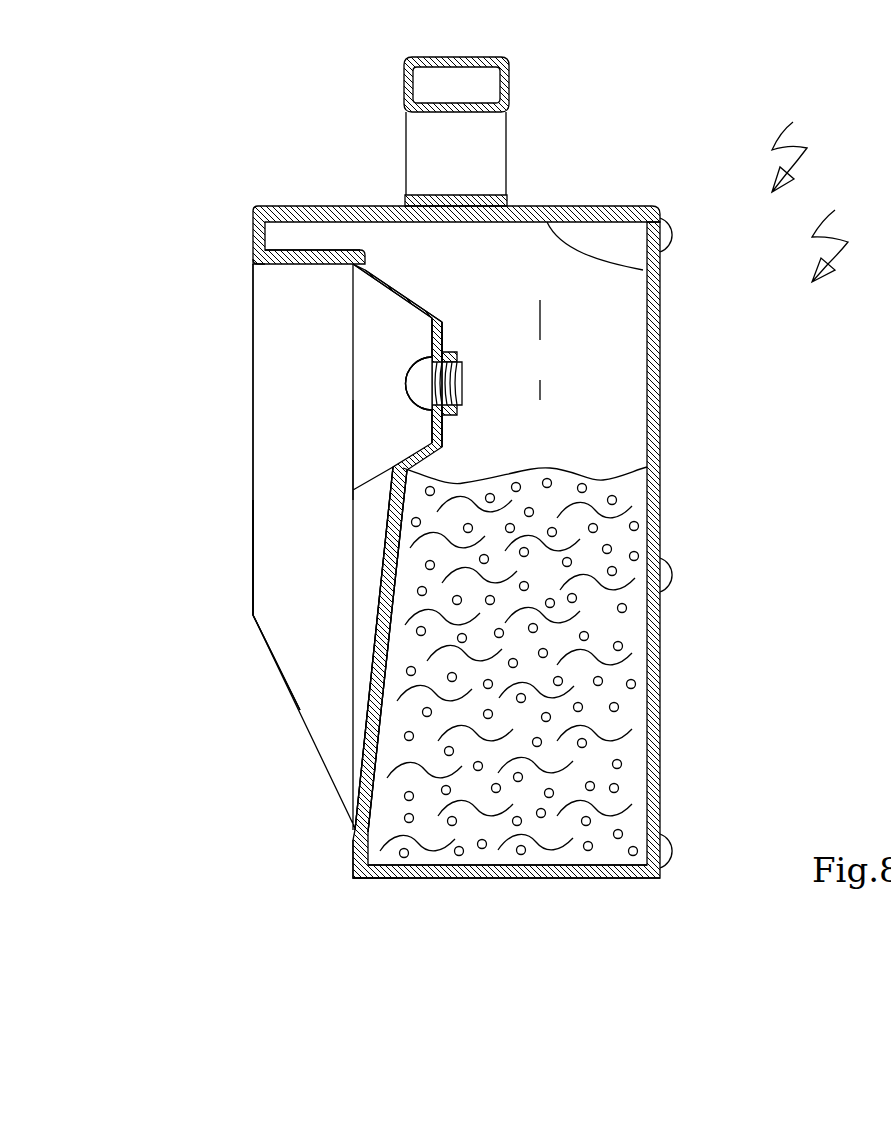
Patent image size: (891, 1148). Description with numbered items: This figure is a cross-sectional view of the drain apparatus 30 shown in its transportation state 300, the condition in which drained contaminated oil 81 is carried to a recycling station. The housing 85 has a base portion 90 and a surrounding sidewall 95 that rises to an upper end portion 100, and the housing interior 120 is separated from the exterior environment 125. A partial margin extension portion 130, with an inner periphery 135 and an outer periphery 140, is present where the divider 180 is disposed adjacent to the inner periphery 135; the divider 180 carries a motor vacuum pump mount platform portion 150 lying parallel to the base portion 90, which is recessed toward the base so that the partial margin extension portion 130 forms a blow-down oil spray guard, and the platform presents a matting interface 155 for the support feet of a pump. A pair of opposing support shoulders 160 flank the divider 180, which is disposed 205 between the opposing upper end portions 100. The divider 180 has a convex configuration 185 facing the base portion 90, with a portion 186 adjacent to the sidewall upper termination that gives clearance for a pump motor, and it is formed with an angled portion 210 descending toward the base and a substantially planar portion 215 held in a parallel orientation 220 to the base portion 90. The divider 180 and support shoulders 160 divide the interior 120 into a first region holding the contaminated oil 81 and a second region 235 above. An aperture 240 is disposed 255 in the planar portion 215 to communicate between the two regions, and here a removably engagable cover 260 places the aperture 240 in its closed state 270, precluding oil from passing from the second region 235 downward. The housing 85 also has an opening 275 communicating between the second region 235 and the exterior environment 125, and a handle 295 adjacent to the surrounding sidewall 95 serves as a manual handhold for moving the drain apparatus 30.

The drain apparatus 30 is at (797, 146).
The transportation state 300 is at (845, 235).
The contaminated oil 81 is at (613, 623).
The housing 85 is at (590, 205).
The base portion 90 is at (660, 370).
The surrounding sidewall 95 is at (600, 877).
The upper end portion 100 is at (280, 205).
The interior 120 is at (403, 443).
The exterior environment 125 is at (847, 391).
The partial margin extension portion 130 is at (253, 486).
The inner periphery 135 is at (278, 308).
The outer periphery 140 is at (255, 205).
The motor vacuum pump mount platform portion 150 is at (353, 268).
The matting interface 155 is at (353, 431).
The support shoulder 160 is at (267, 521).
The divider 180 is at (395, 287).
The convex configuration 185 is at (440, 450).
The portion of convex configuration 186 is at (358, 880).
The divider disposition between opposing upper end portions 205 is at (253, 264).
The angled portion 210 is at (377, 673).
The substantially planar portion 215 is at (385, 590).
The parallel orientation 220 is at (445, 332).
The second region 235 is at (413, 358).
The aperture 240 is at (432, 340).
The aperture disposed in the planar portion 255 is at (432, 340).
The cover 260 is at (412, 385).
The closed state 270 is at (412, 385).
The opening 275 is at (267, 521).
The handle 295 is at (405, 82).